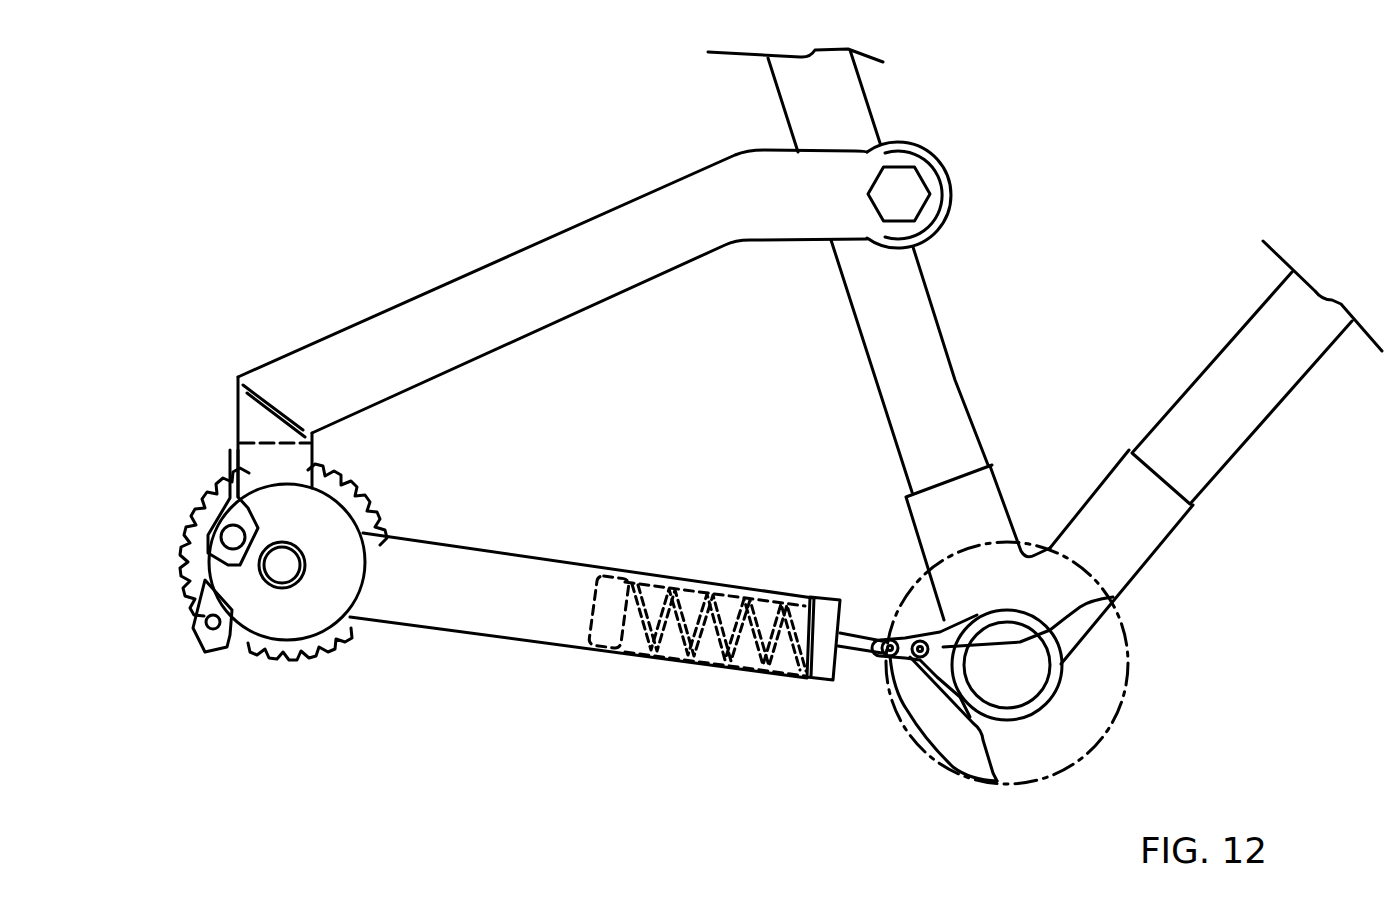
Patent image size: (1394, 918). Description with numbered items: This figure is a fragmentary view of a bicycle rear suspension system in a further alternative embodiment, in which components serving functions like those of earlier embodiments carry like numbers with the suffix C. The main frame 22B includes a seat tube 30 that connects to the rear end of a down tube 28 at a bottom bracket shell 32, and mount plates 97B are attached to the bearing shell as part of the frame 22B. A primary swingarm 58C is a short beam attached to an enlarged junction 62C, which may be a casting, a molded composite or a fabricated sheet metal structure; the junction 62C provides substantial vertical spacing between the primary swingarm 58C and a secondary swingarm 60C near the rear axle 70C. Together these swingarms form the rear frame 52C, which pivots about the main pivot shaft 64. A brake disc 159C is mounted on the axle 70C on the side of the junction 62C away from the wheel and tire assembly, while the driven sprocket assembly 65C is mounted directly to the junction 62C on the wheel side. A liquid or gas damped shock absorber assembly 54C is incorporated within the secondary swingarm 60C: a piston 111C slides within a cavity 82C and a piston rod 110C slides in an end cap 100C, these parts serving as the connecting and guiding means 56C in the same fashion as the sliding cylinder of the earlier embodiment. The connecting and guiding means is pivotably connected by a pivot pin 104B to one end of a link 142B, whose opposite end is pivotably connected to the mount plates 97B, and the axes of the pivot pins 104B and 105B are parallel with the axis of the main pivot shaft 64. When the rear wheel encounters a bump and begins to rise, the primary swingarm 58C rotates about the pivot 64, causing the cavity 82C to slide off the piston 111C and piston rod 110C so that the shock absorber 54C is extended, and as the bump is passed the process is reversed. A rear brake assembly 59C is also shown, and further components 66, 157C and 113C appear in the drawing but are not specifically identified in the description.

The frame 22B is at (866, 97).
The pivot bushing 66 is at (945, 170).
The main pivot shaft 64 is at (898, 198).
The seat tube 30 is at (893, 287).
The upper swing arm 52C is at (583, 220).
The primary swingarm 58C is at (507, 293).
The junction 62C is at (257, 468).
The driven sprocket assembly 65C is at (360, 488).
The chainring 59C is at (193, 563).
The brake disc 159C is at (310, 537).
The mounting plate 157C is at (193, 603).
The rear axle 70C is at (283, 572).
The secondary swingarm 60C is at (477, 617).
The spring end cap 113C is at (640, 633).
The piston 111C is at (630, 588).
The shock absorber assembly 54C is at (683, 662).
The cavity 82C is at (693, 583).
The end cap 100C is at (827, 606).
The piston rod 110C is at (868, 640).
The push rod 56C is at (856, 681).
The pivot pin 104B is at (890, 660).
The link 142B is at (1007, 783).
The pivot pin 105B is at (945, 690).
The bottom bracket shell 32 is at (1062, 682).
The mount plate 97B is at (1113, 597).
The down tube 28 is at (1253, 373).